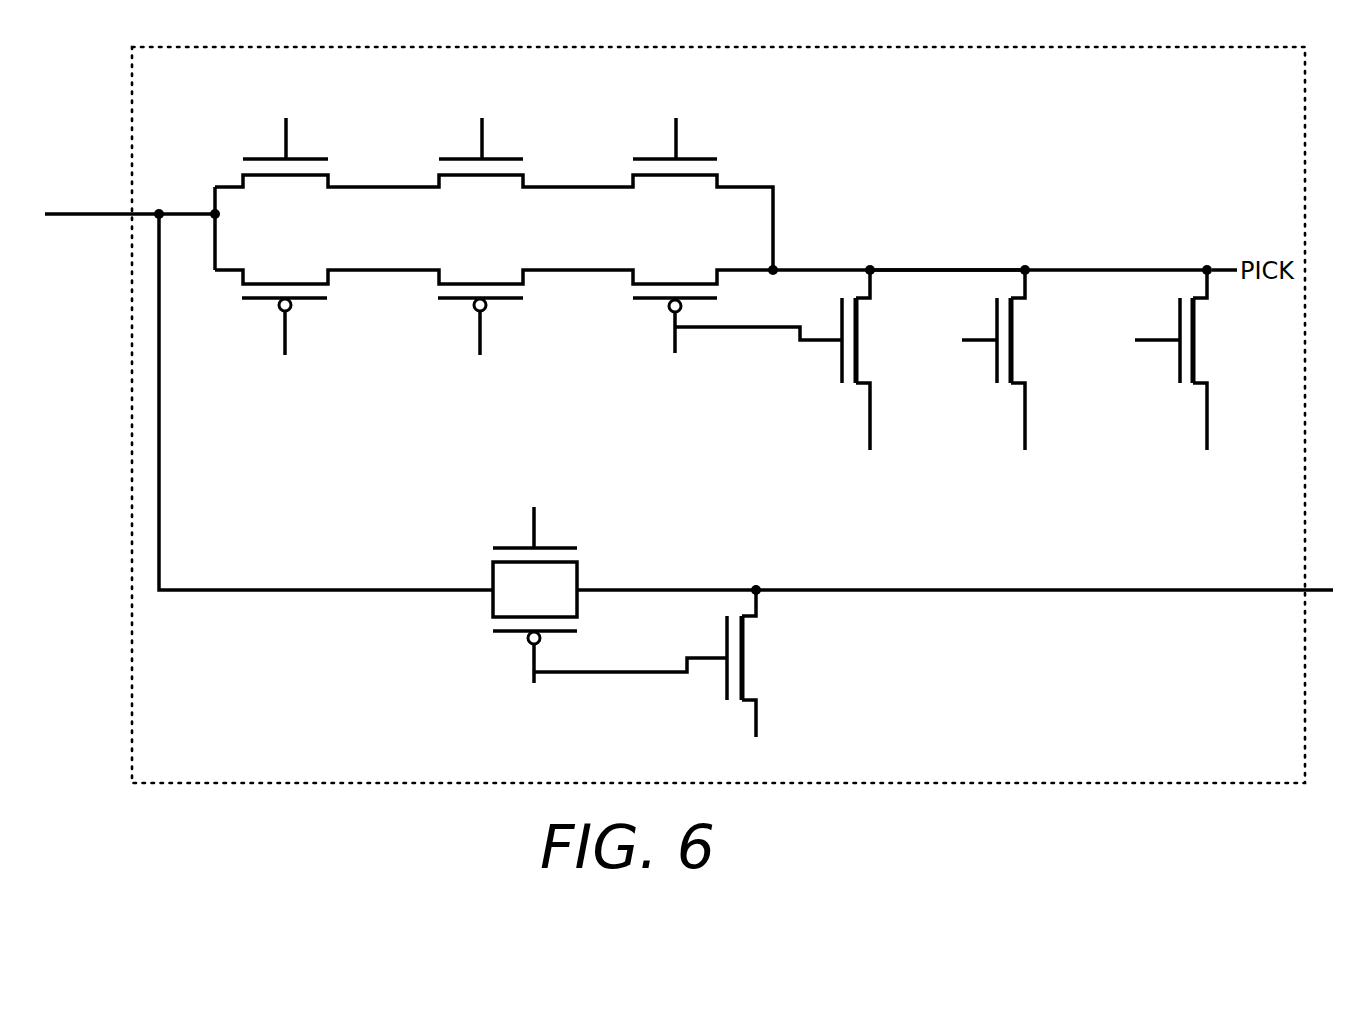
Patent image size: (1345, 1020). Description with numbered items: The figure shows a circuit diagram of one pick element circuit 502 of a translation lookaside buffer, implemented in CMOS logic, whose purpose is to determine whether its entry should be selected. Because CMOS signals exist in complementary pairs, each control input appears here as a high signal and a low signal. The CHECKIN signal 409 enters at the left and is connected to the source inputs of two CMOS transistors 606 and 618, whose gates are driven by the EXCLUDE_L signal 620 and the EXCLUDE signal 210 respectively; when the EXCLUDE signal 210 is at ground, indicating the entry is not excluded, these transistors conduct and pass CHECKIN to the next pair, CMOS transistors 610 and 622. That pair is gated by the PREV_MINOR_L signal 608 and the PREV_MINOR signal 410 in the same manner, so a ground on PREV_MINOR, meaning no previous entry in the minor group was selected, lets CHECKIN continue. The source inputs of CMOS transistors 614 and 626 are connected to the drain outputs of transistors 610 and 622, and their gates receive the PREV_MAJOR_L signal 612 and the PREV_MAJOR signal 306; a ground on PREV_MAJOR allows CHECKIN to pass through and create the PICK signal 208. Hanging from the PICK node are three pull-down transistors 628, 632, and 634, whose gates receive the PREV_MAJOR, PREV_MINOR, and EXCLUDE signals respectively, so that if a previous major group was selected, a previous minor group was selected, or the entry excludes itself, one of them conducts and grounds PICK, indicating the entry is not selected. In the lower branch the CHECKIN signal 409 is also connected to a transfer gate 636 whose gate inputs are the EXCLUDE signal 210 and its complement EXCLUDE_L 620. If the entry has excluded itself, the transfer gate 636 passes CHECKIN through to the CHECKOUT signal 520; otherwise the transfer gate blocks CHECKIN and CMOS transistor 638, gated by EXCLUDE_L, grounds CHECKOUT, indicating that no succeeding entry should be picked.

The pick element circuit 502 is at (295, 785).
The CHECKIN signal 409 is at (63, 218).
The PICK signal 208 is at (934, 252).
The CMOS transistor 606 is at (256, 158).
The EXCLUDE_L signal 620 is at (290, 130).
The CMOS transistor 610 is at (454, 158).
The PREV_MINOR_L signal 608 is at (486, 130).
The CMOS transistor 614 is at (648, 158).
The PREV_MAJOR_L signal 612 is at (680, 130).
The CMOS transistor 618 is at (256, 300).
The CMOS transistor 622 is at (452, 300).
The CMOS transistor 626 is at (650, 300).
The EXCLUDE signal 210 is at (290, 328).
The PREV_MINOR signal 410 is at (485, 328).
The PREV_MAJOR signal 306 is at (730, 330).
The CMOS transistor 628 is at (842, 370).
The CMOS transistor 632 is at (997, 370).
The CMOS transistor 634 is at (1180, 370).
The transfer gate 636 is at (580, 572).
The CHECKOUT signal 520 is at (800, 588).
The CMOS transistor 638 is at (727, 688).